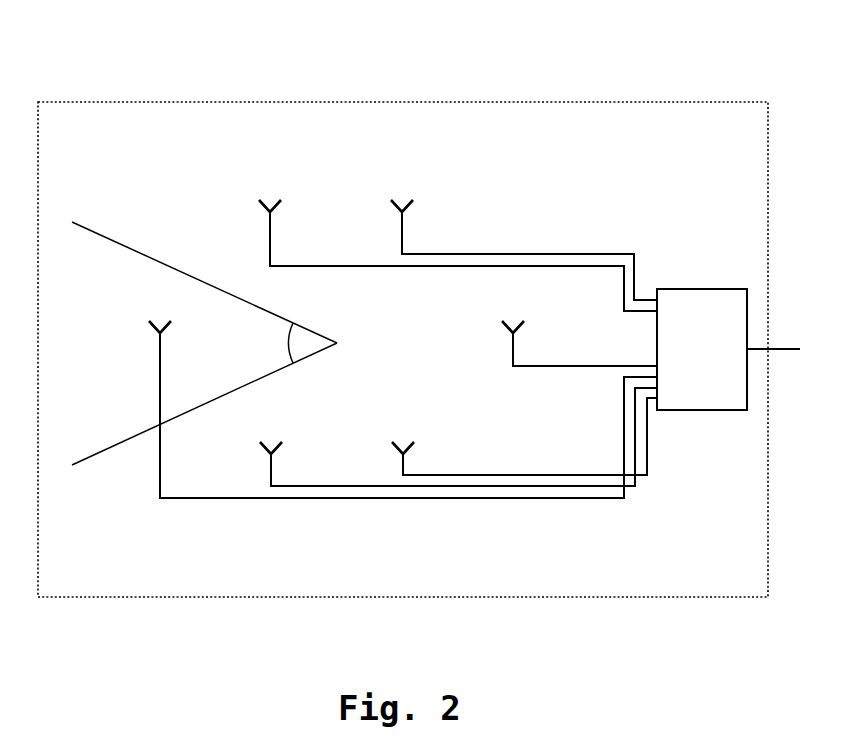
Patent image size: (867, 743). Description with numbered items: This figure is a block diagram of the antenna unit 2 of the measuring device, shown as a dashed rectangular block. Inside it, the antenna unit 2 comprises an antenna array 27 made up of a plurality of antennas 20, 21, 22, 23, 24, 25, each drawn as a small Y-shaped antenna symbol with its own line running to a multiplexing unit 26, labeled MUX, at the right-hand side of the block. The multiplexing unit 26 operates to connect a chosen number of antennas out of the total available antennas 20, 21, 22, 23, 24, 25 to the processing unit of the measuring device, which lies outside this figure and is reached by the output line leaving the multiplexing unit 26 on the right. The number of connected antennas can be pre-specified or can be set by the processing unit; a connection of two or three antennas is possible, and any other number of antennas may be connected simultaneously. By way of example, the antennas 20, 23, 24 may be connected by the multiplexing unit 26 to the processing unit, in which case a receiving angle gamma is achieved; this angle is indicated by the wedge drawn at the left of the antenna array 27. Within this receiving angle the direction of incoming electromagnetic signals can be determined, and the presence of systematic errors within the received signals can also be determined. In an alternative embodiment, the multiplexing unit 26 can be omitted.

The antenna unit 2 is at (93, 100).
The antenna 20 is at (260, 200).
The antenna 21 is at (398, 208).
The antenna 22 is at (522, 323).
The antenna 23 is at (153, 340).
The antenna 24 is at (262, 460).
The antenna 25 is at (395, 460).
The multiplexing unit 26 is at (747, 306).
The antenna array 27 is at (650, 182).